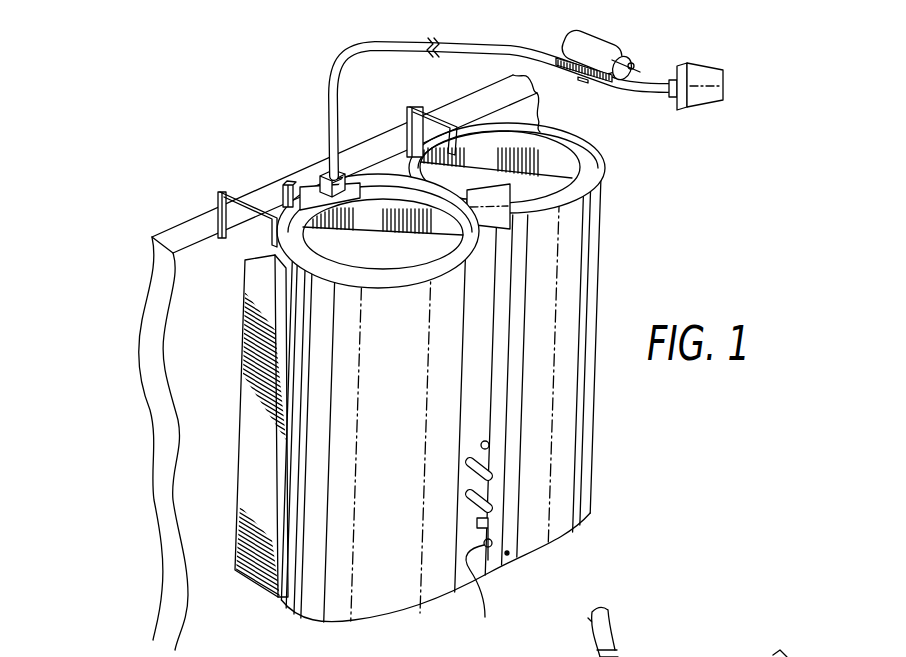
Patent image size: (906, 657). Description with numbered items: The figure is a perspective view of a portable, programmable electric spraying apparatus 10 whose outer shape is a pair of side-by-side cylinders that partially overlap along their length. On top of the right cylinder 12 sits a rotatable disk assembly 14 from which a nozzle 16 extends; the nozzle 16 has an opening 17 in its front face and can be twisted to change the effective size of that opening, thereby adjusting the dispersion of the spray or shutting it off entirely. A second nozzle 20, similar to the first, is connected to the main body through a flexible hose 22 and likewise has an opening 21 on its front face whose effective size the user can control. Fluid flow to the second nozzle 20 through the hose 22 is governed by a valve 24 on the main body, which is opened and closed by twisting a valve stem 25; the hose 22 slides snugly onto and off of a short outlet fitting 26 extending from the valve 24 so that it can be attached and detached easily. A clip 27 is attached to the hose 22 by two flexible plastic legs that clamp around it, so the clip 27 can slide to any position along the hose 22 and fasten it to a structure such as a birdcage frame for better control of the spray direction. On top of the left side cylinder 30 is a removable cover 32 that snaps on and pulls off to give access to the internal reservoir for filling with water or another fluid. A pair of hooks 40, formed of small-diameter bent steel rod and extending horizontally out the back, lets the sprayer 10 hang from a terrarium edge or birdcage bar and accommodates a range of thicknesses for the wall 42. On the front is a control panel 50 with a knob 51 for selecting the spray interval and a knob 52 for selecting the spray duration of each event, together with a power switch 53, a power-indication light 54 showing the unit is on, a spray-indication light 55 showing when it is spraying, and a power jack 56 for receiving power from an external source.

The portable electric spraying apparatus 10 is at (307, 573).
The right cylinder 12 is at (383, 560).
The rotatable disk assembly 14 is at (340, 250).
The nozzle 16 is at (490, 210).
The opening 17 is at (513, 210).
The second nozzle 20 is at (700, 77).
The opening 21 is at (724, 90).
The flexible hose 22 is at (512, 52).
The valve 24 is at (323, 185).
The valve stem 25 is at (290, 182).
The outlet fitting 26 is at (615, 656).
The clip 27 is at (612, 55).
The left side cylinder 30 is at (573, 300).
The removable cover 32 is at (553, 153).
The hooks 40 is at (220, 193).
The wall 42 is at (200, 408).
The control panel 50 is at (463, 482).
The knob 51 is at (495, 478).
The knob 52 is at (498, 510).
The power switch 53 is at (490, 522).
The power-indication light 54 is at (500, 547).
The spray-indication light 55 is at (489, 446).
The power jack 56 is at (485, 617).